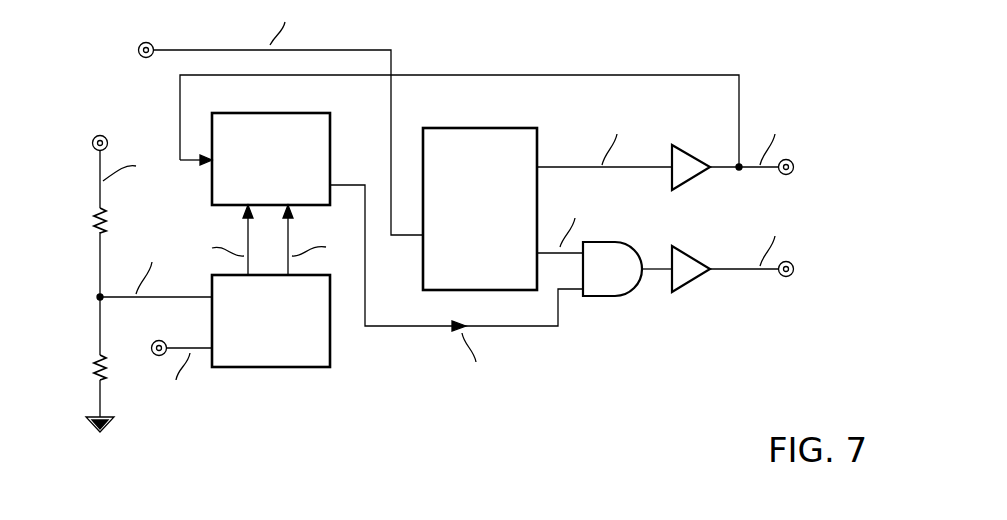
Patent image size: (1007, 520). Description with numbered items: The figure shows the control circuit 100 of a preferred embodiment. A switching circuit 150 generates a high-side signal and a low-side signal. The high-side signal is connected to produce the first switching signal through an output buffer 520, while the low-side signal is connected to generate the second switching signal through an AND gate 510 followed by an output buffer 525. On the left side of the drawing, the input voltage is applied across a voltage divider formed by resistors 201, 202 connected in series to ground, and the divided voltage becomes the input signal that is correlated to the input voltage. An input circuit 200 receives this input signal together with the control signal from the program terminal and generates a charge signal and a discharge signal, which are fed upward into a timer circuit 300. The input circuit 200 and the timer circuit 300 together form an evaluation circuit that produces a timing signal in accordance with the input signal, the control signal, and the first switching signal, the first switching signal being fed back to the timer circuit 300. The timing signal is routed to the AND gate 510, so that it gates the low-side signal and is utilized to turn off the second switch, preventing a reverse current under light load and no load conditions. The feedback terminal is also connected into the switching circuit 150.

The control circuit 100 is at (806, 38).
The switching circuit 150 is at (497, 214).
The input circuit 200 is at (288, 334).
The resistor 201 is at (88, 221).
The resistor 202 is at (88, 368).
The timer circuit 300 is at (288, 172).
The AND gate 510 is at (607, 302).
The output buffer 520 is at (694, 183).
The output buffer 525 is at (694, 285).